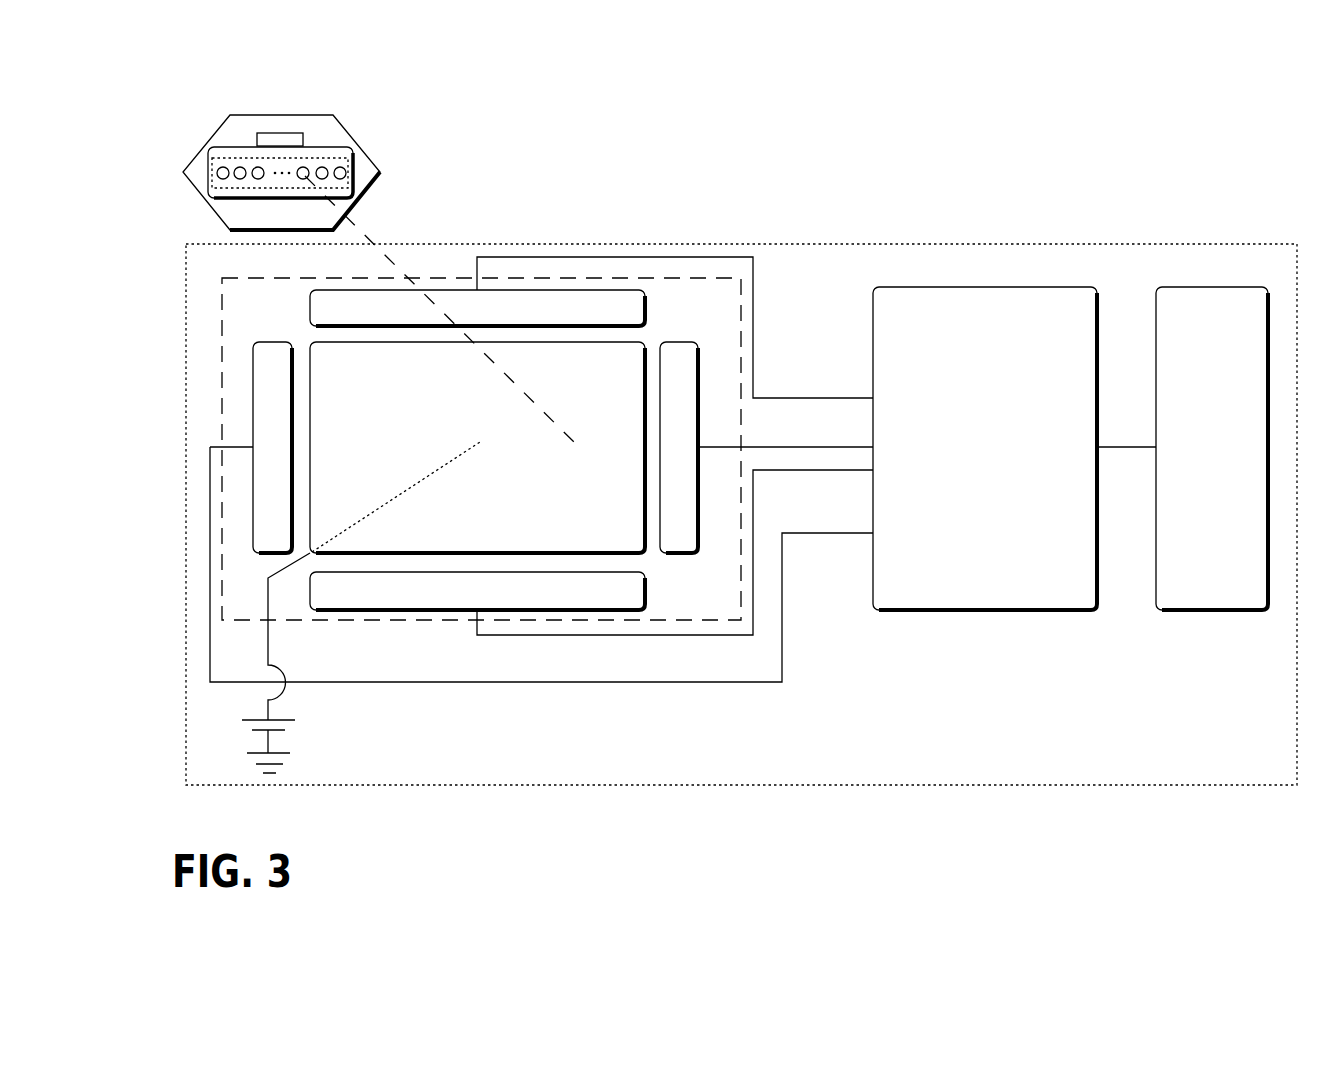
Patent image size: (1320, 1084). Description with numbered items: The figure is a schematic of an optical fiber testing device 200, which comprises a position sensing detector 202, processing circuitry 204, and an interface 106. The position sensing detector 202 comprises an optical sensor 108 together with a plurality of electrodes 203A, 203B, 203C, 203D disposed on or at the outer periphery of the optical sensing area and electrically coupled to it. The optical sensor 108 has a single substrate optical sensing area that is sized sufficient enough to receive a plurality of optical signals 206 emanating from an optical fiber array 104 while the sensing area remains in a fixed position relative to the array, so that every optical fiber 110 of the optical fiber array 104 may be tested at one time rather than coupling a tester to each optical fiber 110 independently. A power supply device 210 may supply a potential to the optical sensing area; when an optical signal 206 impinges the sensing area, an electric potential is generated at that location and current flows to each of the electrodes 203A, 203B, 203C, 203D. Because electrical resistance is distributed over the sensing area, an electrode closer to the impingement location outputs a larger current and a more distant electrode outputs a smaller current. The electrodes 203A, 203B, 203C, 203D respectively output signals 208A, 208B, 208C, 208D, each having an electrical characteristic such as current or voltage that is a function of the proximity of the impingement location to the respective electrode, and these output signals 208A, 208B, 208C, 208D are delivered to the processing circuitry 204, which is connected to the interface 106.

The optical fiber array 104 is at (222, 160).
The optical fiber 110 is at (340, 166).
The optical signal 206 is at (363, 244).
The optical fiber testing device 200 is at (935, 243).
The position sensing detector 202 is at (362, 621).
The optical sensor 108 is at (308, 342).
The electrode 203A is at (678, 555).
The electrode 203B is at (253, 412).
The electrode 203C is at (646, 296).
The electrode 203D is at (645, 594).
The output signal 208A is at (782, 447).
The output signal 208B is at (792, 534).
The output signal 208C is at (798, 398).
The output signal 208D is at (784, 471).
The power supply device 210 is at (295, 720).
The processing circuitry 204 is at (962, 612).
The interface 106 is at (1196, 612).